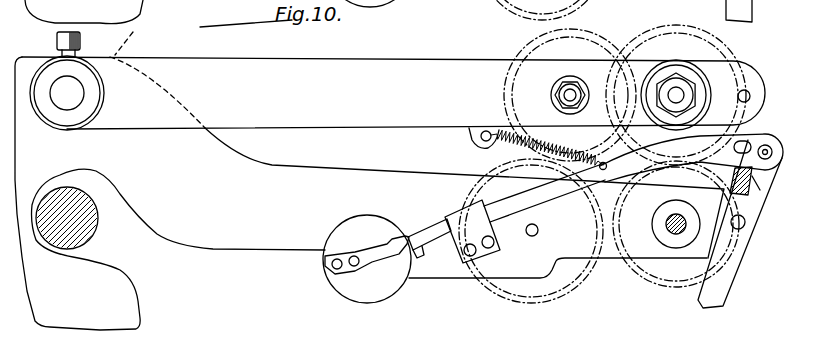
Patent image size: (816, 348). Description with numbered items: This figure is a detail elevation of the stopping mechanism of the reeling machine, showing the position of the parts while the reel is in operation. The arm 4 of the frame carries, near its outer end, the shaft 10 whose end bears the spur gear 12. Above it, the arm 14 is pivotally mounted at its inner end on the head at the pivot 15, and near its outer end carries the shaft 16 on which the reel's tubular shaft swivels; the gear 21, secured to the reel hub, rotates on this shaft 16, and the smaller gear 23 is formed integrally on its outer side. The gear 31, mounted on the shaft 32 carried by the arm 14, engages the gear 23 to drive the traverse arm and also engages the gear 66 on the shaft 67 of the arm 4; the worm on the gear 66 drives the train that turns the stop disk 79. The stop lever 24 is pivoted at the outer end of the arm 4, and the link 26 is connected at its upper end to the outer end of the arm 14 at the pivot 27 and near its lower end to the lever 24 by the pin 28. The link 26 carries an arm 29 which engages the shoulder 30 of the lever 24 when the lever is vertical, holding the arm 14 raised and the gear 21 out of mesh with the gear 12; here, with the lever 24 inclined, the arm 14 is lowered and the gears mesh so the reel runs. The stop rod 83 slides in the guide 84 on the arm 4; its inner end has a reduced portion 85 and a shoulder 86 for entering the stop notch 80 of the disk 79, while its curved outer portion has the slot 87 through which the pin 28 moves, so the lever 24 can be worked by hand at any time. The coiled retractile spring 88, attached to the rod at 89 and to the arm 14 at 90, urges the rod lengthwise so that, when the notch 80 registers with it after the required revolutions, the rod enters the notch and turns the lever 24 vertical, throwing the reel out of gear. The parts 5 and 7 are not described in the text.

The arm 4 is at (417, 145).
The shaft 5 is at (92, 214).
The bracket 7 is at (361, 181).
The shaft 10 is at (668, 223).
The spur gear 12 is at (649, 281).
The arm 14 is at (393, 93).
The pivot 15 is at (70, 93).
The shaft 16 is at (682, 95).
The gear 21 is at (690, 33).
The gear 23 is at (688, 63).
The stop lever 24 is at (722, 293).
The link 26 is at (760, 142).
The pivotal connection 27 is at (746, 92).
The pin 28 is at (736, 178).
The arm 29 is at (752, 176).
The shoulder 30 is at (746, 222).
The gear 31 is at (520, 42).
The shaft 32 is at (570, 88).
The gear 66 is at (518, 301).
The shaft 67 is at (539, 232).
The stop disk 79 is at (367, 290).
The stop notch 80 is at (389, 238).
The stop rod 83 is at (542, 193).
The guide 84 is at (474, 206).
The reduced portion 85 is at (421, 258).
The shoulder 86 is at (433, 230).
The slot 87 is at (746, 146).
The spring 88 is at (547, 147).
The spring attachment 89 is at (607, 166).
The spring attachment 90 is at (482, 138).